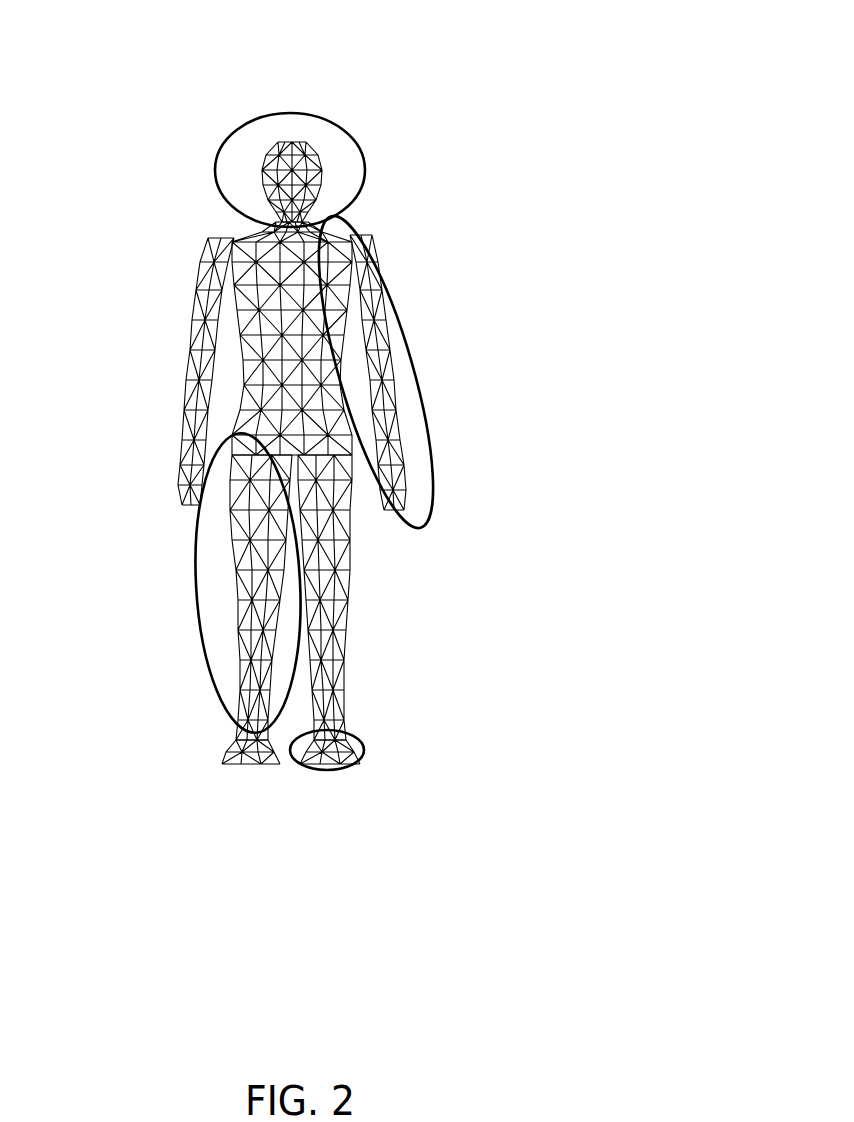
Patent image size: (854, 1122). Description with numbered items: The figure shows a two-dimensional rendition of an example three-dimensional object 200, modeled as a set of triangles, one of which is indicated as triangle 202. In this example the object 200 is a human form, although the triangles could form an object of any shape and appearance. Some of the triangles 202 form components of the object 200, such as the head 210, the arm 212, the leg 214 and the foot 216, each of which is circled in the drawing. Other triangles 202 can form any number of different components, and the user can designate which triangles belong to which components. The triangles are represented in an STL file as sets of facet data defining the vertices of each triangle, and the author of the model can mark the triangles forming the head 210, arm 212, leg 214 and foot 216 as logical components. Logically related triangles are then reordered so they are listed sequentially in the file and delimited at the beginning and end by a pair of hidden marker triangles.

The 3D object 200 is at (366, 78).
The triangle 202 is at (208, 272).
The head 210 is at (363, 165).
The arm 212 is at (408, 355).
The leg 214 is at (197, 590).
The foot 216 is at (362, 745).